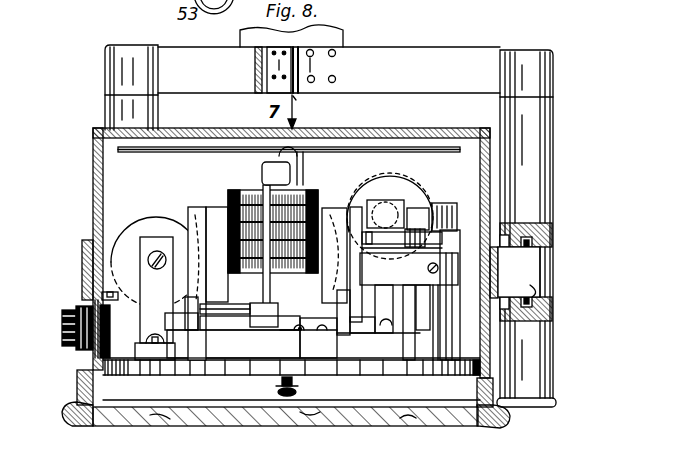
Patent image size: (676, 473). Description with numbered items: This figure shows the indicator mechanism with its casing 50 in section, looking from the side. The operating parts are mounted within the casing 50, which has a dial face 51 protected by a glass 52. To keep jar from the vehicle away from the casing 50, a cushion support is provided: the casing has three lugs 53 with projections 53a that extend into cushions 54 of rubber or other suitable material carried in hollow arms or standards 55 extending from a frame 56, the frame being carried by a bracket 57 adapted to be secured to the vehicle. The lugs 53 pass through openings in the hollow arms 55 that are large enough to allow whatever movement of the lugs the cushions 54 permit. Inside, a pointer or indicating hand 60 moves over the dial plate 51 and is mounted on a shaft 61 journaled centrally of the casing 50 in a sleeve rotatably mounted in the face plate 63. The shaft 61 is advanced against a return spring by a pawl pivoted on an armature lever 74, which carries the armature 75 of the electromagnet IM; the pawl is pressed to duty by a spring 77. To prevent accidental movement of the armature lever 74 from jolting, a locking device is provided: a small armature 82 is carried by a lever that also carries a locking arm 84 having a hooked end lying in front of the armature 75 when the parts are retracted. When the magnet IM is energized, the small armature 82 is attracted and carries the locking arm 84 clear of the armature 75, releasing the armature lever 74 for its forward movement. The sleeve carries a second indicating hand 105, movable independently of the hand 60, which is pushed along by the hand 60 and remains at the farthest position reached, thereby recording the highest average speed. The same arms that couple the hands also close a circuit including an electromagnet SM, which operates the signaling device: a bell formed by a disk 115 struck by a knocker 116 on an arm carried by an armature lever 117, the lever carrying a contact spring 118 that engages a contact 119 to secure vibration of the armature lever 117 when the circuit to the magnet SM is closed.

The casing 50 is at (387, 134).
The dial face 51 is at (205, 376).
The glass 52 is at (228, 428).
The lug 53 is at (517, 272).
The projection 53a is at (530, 292).
The cushion 54 is at (543, 233).
The hollow arm 55 is at (108, 108).
The frame 56 is at (329, 70).
The bracket 57 is at (344, 38).
The indicating hand 60 is at (294, 392).
The shaft 61 is at (288, 398).
The face plate 63 is at (412, 371).
The armature lever 74 is at (388, 286).
The armature 75 is at (396, 194).
The spring 77 is at (420, 270).
The small armature 82 is at (434, 210).
The locking arm 84 is at (443, 238).
The second indicating hand 105 is at (280, 381).
The disk 115 is at (178, 153).
The knocker 116 is at (304, 172).
The armature lever 117 is at (268, 315).
The contact spring 118 is at (262, 326).
The contact 119 is at (295, 331).
The signal electromagnet SM is at (267, 219).
The indicator electromagnet IM is at (399, 216).